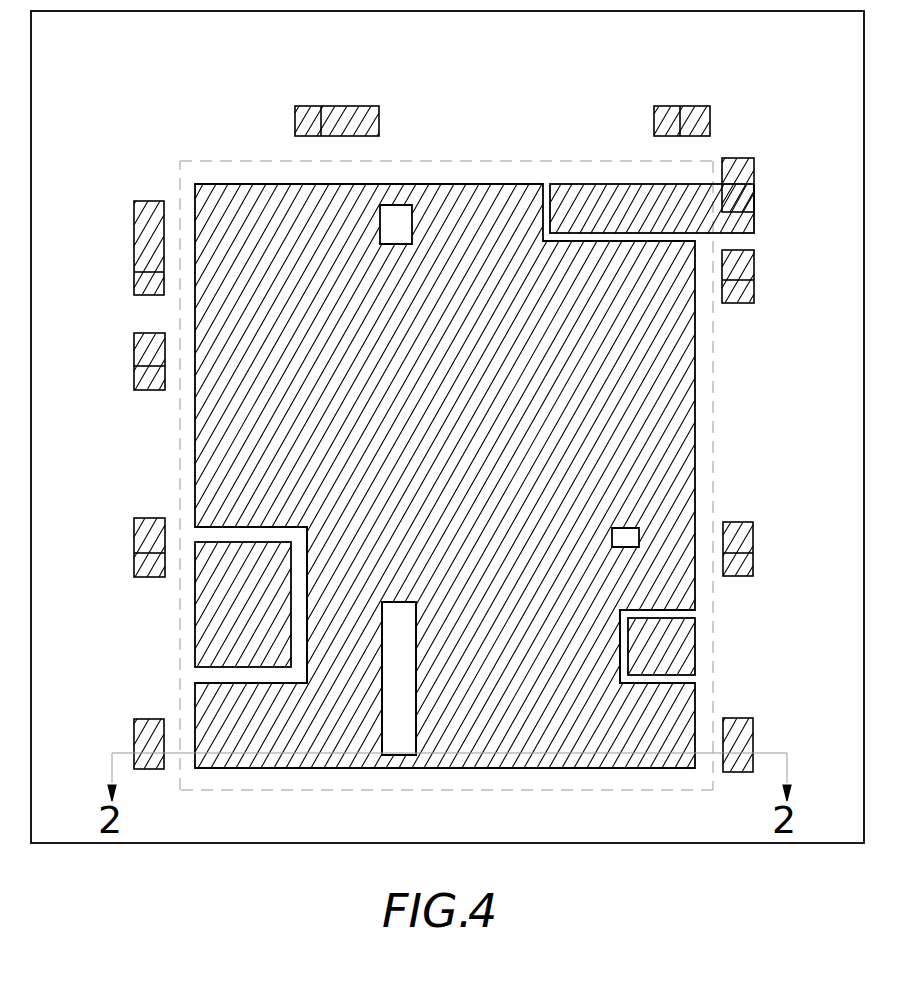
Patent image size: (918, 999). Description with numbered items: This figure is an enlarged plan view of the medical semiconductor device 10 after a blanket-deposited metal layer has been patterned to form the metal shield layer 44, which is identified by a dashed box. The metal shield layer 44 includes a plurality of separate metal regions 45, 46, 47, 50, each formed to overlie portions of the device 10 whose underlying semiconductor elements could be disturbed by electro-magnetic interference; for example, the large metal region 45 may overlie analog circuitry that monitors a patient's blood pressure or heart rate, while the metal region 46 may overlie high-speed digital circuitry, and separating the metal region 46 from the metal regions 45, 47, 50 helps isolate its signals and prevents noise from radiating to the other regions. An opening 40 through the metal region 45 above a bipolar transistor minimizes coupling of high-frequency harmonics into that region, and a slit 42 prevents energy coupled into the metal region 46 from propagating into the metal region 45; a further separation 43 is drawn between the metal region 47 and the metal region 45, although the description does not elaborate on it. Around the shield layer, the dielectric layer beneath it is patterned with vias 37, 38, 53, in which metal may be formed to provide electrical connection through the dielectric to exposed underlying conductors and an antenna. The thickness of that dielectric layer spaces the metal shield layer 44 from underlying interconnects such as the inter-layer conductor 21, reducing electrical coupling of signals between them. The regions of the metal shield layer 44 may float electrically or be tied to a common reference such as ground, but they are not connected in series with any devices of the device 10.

The device 10 is at (206, 890).
The inter-layer conductor 21 is at (447, 427).
The via 37 is at (133, 742).
The via 38 is at (755, 740).
The opening 40 is at (400, 743).
The slit 42 is at (207, 535).
The recess / notch 43 is at (695, 614).
The metal shield layer 44 is at (228, 160).
The metal region 45 is at (213, 317).
The metal region 46 is at (203, 592).
The metal region 47 is at (695, 627).
The metal region 50 is at (753, 223).
The via 53 is at (305, 106).